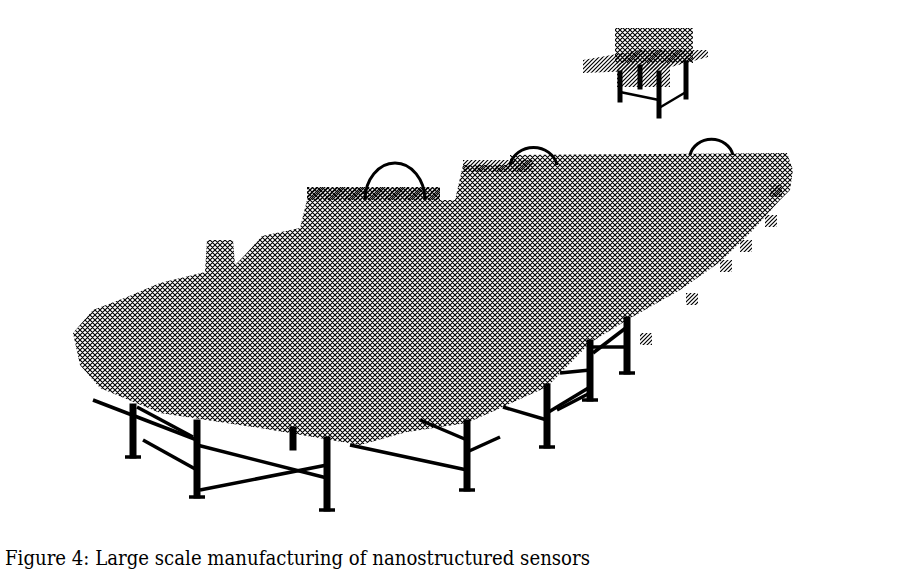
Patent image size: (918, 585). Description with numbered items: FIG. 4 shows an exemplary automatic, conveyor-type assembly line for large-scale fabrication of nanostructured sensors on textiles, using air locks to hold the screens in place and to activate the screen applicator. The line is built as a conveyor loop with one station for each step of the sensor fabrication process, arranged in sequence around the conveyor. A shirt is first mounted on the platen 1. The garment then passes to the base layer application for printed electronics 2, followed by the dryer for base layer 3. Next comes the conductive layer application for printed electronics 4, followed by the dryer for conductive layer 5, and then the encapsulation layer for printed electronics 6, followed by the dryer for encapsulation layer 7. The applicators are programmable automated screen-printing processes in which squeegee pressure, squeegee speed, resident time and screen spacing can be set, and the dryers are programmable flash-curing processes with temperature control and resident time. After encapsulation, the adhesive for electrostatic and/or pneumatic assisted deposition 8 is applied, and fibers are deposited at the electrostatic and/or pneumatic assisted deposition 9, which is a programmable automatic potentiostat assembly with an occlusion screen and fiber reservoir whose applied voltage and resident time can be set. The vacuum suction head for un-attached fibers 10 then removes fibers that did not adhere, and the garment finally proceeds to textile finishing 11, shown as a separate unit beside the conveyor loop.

The mounting a shirt on platen station 1 is at (748, 142).
The base layer application for printed electronics station 2 is at (778, 192).
The dryer for base layer 3 is at (773, 223).
The conductive layer application for printed electronics station 4 is at (747, 247).
The dryer for conductive layer 5 is at (727, 267).
The encapsulation layer for printed electronics station 6 is at (693, 300).
The dryer for encapsulation layer 7 is at (647, 340).
The adhesive for electrostatic and/or pneumatic assisted deposition station 8 is at (373, 180).
The electrostatic and/or pneumatic assisted deposition station 9 is at (488, 156).
The vacuum suction head for un-attached fibers 10 is at (533, 141).
The textile finishing station 11 is at (672, 72).